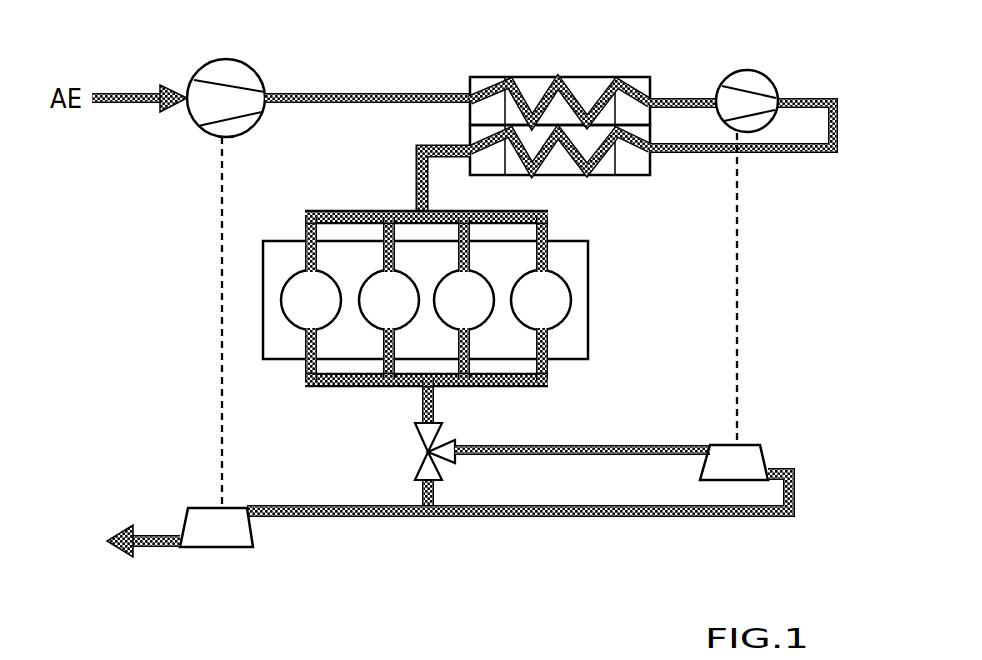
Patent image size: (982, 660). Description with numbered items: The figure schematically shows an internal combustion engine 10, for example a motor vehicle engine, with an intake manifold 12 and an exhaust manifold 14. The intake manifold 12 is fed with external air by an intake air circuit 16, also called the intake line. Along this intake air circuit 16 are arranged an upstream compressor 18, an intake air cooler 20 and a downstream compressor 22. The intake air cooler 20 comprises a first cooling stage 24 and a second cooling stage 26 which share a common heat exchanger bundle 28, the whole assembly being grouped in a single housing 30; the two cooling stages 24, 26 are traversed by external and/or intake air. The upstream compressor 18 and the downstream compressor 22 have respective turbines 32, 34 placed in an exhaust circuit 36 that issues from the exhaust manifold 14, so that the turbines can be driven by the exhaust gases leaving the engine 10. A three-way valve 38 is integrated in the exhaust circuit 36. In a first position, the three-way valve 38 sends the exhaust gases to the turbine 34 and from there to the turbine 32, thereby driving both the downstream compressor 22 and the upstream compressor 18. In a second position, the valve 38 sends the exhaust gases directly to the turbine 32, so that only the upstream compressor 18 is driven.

The internal combustion engine 10 is at (258, 320).
The intake manifold 12 is at (363, 211).
The exhaust manifold 14 is at (344, 390).
The intake air circuit 16 is at (346, 90).
The upstream compressor 18 is at (221, 56).
The intake air cooler 20 is at (581, 112).
The downstream compressor 22 is at (766, 66).
The first cooling stage 24 is at (645, 83).
The second cooling stage 26 is at (630, 160).
The heat exchanger bundle 28 is at (557, 157).
The housing 30 is at (492, 77).
The turbine 32 is at (220, 549).
The turbine 34 is at (752, 445).
The exhaust circuit 36 is at (503, 524).
The three-way valve 38 is at (416, 465).